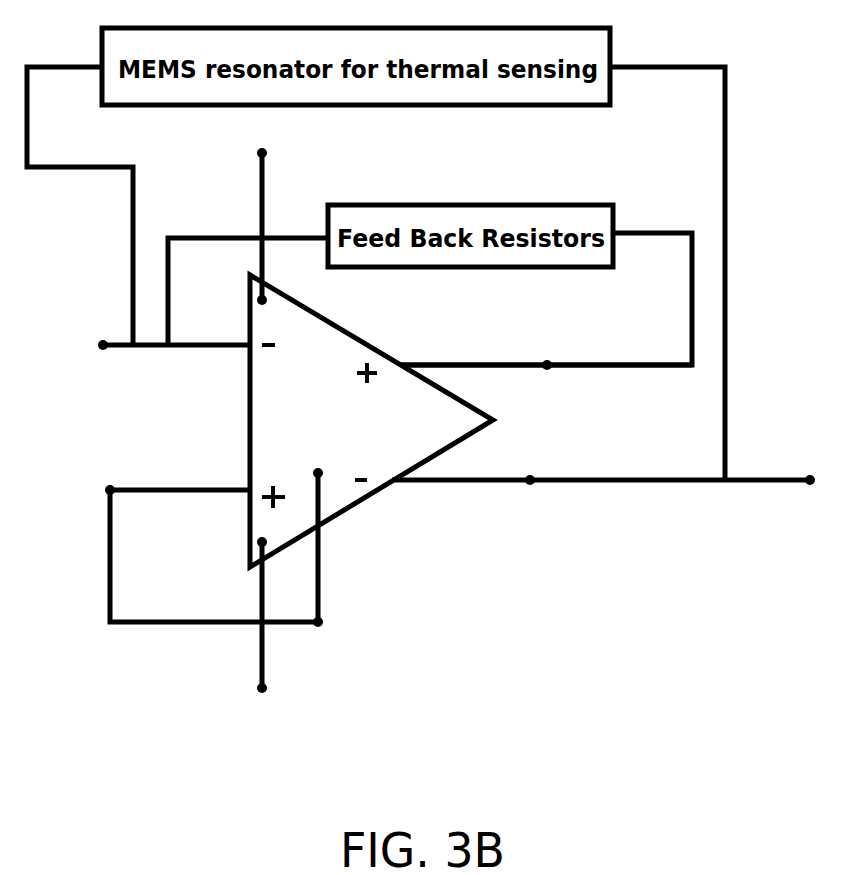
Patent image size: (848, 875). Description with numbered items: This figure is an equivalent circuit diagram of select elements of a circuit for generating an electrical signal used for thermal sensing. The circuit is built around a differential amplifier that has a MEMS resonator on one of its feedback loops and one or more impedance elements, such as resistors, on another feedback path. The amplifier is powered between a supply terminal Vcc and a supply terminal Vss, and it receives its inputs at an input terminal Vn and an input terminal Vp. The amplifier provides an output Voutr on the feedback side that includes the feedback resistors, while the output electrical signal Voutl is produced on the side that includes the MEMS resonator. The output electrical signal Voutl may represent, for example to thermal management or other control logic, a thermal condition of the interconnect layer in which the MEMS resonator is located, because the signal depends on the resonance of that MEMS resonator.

The positive supply voltage terminal Vcc is at (261, 212).
The negative supply voltage terminal Vss is at (236, 620).
The inverting input terminal Vn is at (150, 344).
The non-inverting input terminal Vp is at (189, 547).
The right output terminal Voutr is at (546, 347).
The output electrical signal Voutl is at (603, 462).